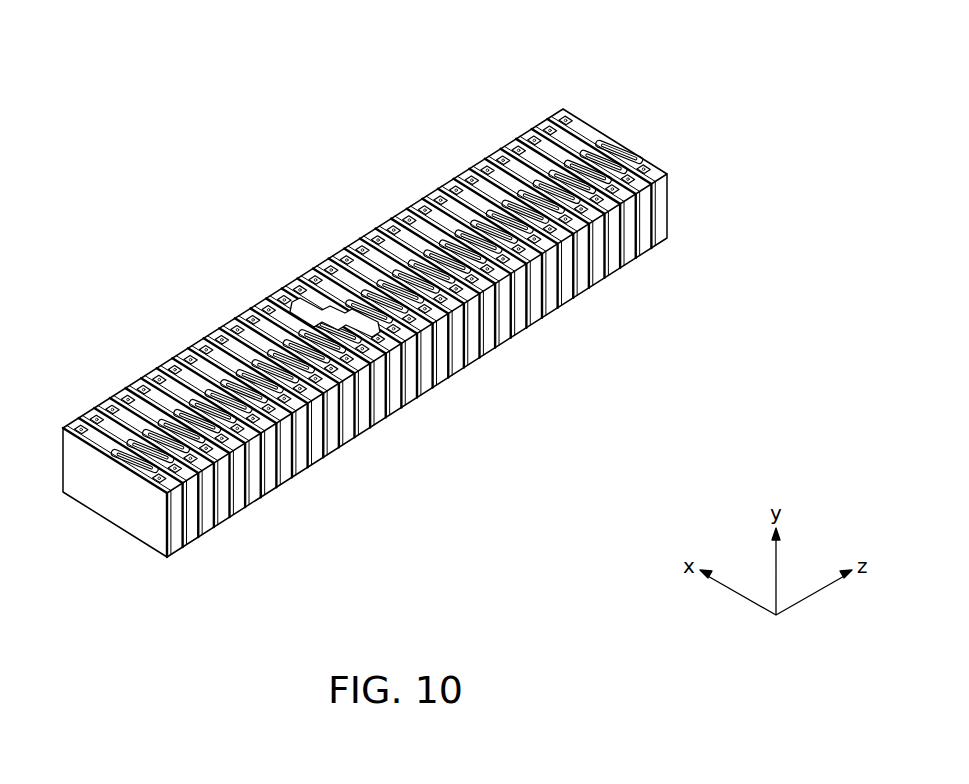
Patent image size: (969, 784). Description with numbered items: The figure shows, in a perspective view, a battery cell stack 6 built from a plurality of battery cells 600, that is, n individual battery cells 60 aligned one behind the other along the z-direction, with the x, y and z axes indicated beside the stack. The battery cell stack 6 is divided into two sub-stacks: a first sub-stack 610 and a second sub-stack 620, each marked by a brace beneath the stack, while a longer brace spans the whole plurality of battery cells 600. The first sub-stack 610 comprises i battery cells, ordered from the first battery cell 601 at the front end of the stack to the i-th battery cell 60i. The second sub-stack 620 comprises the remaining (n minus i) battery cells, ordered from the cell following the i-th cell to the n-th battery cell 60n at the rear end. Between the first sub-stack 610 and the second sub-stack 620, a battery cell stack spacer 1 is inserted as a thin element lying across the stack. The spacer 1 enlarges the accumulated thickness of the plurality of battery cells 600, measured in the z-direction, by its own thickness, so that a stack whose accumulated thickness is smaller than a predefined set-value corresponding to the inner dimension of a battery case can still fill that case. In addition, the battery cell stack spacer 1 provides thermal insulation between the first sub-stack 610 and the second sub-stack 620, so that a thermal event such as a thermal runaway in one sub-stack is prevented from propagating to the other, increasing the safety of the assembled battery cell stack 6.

The battery cell stack 6 is at (409, 311).
The battery cell stack spacer 1 is at (278, 278).
The battery cells 60 is at (430, 192).
The first battery cell 601 is at (63, 428).
The n-th battery cell 60n is at (601, 142).
The i-th battery cell 60i is at (284, 287).
The plurality of battery cells 600 is at (366, 311).
The first sub-stack 610 is at (227, 383).
The second sub-stack 620 is at (498, 233).